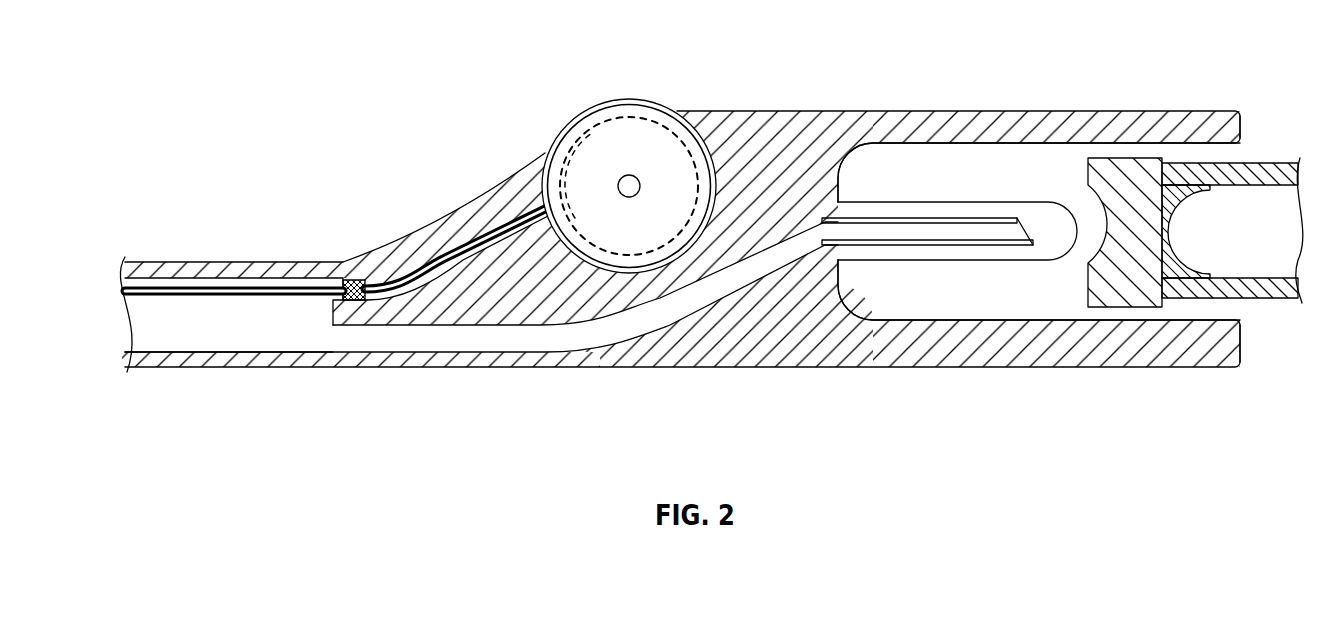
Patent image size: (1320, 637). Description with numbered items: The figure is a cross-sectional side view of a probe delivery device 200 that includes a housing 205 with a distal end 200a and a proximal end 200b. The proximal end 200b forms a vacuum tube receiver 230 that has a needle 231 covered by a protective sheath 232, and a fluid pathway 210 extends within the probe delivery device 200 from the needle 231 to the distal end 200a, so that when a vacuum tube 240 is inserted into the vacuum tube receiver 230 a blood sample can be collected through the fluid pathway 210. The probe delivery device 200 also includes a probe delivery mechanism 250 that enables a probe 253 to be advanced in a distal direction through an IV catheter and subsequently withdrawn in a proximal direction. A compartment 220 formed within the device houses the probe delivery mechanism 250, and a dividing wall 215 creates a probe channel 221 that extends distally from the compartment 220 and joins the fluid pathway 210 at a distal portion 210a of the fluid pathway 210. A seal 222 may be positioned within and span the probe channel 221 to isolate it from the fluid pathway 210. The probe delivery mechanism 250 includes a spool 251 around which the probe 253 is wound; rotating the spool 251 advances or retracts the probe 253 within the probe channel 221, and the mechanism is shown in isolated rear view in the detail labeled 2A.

The probe delivery device 200 is at (1055, 50).
The distal end 200a is at (139, 253).
The proximal end 200b is at (1237, 384).
The housing 205 is at (828, 335).
The fluid pathway 210 is at (510, 329).
The distal portion of fluid pathway 210a is at (160, 330).
The dividing wall 215 is at (405, 312).
The compartment 220 is at (548, 150).
The probe channel 221 is at (413, 267).
The seal 222 is at (346, 282).
The vacuum tube receiver 230 is at (940, 284).
The needle 231 is at (957, 216).
The protective sheath 232 is at (1000, 200).
The vacuum tube 240 is at (1276, 138).
The probe delivery mechanism 250 is at (551, 103).
The spool 251 is at (626, 99).
The probe 253 is at (237, 290).
The detail view reference 2A is at (737, 165).